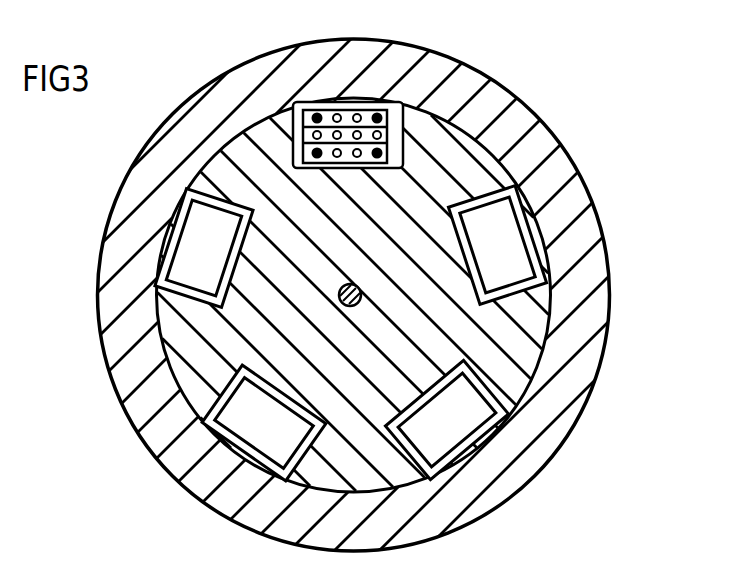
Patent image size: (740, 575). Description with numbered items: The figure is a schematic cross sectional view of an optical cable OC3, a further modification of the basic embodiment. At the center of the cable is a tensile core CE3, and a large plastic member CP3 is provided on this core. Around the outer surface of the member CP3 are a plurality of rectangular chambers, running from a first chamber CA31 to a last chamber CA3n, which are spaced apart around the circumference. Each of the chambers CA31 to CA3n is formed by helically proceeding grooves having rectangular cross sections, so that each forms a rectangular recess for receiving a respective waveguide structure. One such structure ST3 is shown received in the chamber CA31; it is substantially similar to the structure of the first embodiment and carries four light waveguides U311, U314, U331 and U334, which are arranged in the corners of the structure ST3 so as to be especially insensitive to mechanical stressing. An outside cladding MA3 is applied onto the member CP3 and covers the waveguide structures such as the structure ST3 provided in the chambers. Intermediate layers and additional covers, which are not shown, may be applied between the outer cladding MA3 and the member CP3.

The optical cable OC3 is at (624, 298).
The outside cladding MA3 is at (581, 226).
The plastic member CP3 is at (207, 373).
The rectangular chamber CA3n is at (158, 282).
The rectangular chamber CA31 is at (403, 153).
The waveguide structure ST3 is at (294, 133).
The tensile core CE3 is at (343, 288).
The light waveguide U311 is at (316, 112).
The light waveguide U314 is at (377, 112).
The light waveguide U331 is at (317, 159).
The light waveguide U334 is at (380, 159).